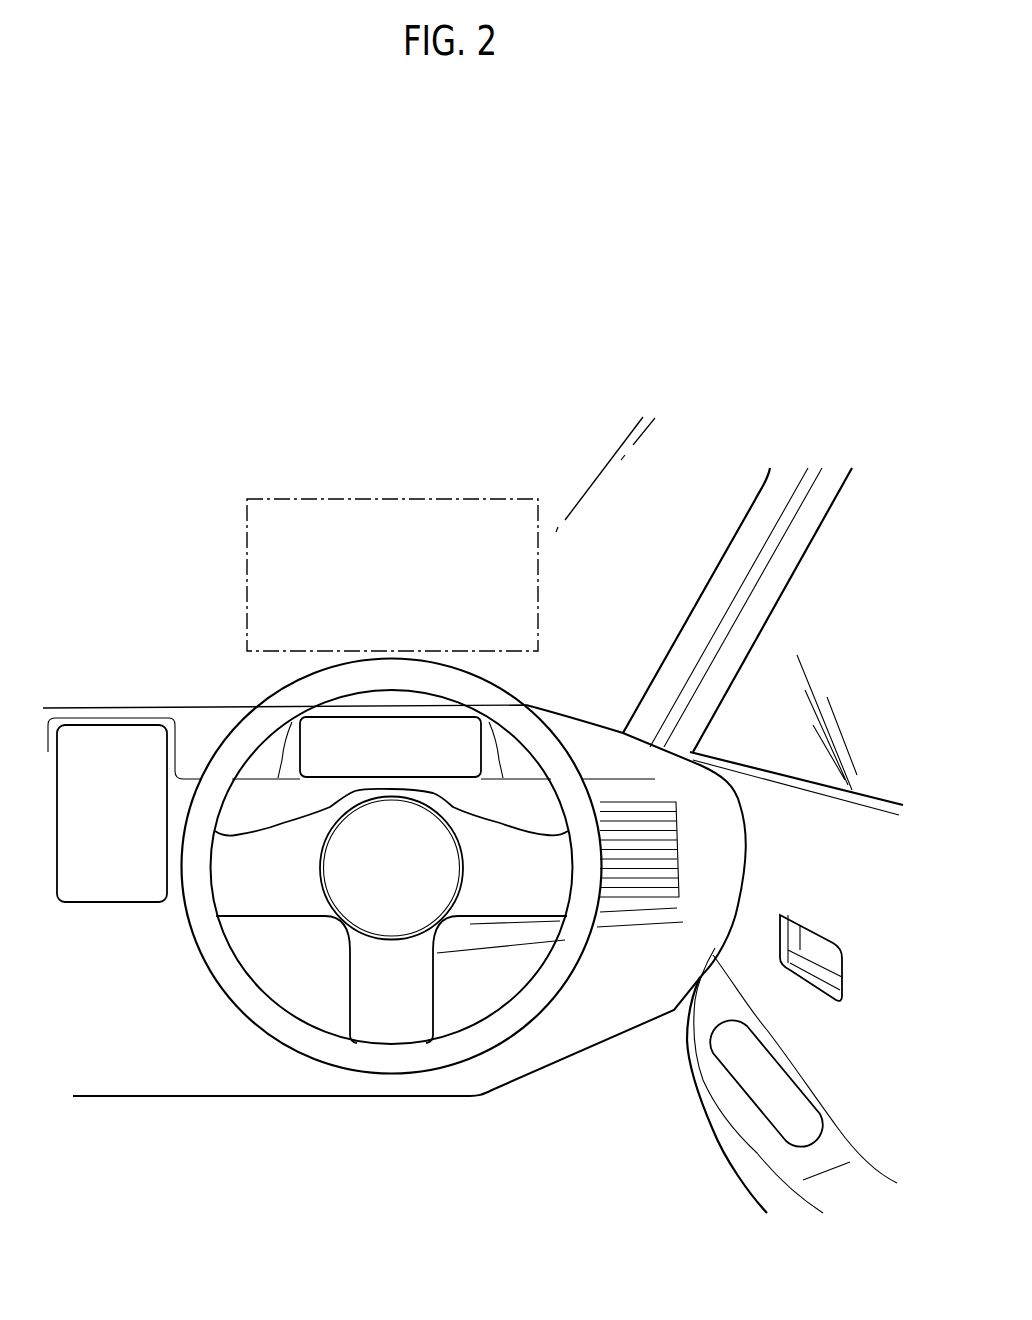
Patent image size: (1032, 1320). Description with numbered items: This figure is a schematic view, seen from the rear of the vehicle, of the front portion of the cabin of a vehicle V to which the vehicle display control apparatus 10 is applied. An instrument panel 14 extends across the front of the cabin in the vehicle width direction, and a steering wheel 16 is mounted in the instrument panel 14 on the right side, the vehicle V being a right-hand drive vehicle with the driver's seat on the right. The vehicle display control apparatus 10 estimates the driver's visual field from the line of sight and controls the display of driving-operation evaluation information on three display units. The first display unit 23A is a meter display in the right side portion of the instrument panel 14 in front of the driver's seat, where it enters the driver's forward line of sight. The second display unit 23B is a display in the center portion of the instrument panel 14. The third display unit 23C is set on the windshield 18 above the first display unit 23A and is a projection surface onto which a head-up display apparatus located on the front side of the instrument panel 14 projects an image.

The vehicle V is at (378, 360).
The vehicle display control apparatus 10 is at (337, 455).
The instrument panel 14 is at (587, 1051).
The steering wheel 16 is at (570, 742).
The windshield 18 is at (673, 580).
The first display unit 23A is at (330, 740).
The second display unit 23B is at (116, 883).
The third display unit 23C is at (396, 500).